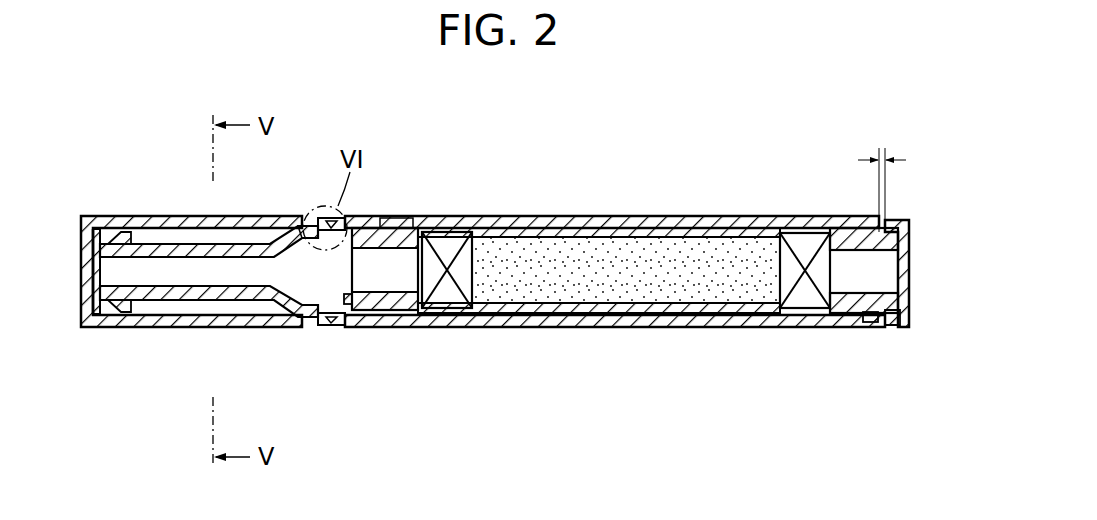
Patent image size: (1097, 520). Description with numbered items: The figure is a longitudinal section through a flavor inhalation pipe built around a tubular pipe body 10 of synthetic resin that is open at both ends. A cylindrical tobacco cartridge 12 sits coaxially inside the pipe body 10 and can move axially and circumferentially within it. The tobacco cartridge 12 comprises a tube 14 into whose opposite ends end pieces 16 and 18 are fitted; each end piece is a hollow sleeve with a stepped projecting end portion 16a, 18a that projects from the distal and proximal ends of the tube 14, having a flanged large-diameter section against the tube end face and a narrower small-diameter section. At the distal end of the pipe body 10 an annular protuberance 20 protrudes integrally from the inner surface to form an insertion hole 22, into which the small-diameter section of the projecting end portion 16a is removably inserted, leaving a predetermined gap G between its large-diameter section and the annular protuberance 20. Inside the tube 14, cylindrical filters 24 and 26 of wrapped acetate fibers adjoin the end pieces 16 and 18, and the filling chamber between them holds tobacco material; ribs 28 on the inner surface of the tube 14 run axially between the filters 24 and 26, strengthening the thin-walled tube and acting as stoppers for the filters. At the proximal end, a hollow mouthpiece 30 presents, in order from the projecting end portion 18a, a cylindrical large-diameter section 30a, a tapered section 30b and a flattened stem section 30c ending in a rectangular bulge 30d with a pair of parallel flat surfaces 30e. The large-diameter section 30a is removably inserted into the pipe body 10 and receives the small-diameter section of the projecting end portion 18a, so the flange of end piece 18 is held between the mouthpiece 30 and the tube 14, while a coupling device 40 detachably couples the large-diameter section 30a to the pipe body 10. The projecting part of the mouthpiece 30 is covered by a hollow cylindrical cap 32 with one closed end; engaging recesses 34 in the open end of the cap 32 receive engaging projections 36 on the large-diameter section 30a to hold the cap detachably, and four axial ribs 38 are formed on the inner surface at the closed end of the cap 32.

The pipe body 10 is at (620, 222).
The tobacco cartridge 12 is at (672, 218).
The tube 14 is at (635, 313).
The end piece 16 is at (833, 232).
The projecting end portion 16a is at (904, 327).
The end piece 18 is at (410, 224).
The projecting end portion 18a is at (347, 322).
The annular protuberance 20 is at (870, 322).
The insertion hole 22 is at (910, 233).
The filter 24 is at (808, 300).
The filter 26 is at (453, 303).
The ribs 28 is at (548, 240).
The mouthpiece 30 is at (241, 286).
The large-diameter section 30a is at (350, 226).
The tapered section 30b is at (263, 244).
The stem section 30c is at (209, 301).
The bulge 30d is at (96, 322).
The flat surfaces 30e is at (112, 232).
The cap 32 is at (153, 222).
The engaging recesses 34 is at (296, 218).
The engaging projections 36 is at (302, 326).
The ribs 38 is at (203, 318).
The coupling device 40 is at (322, 208).
The gap G is at (882, 175).